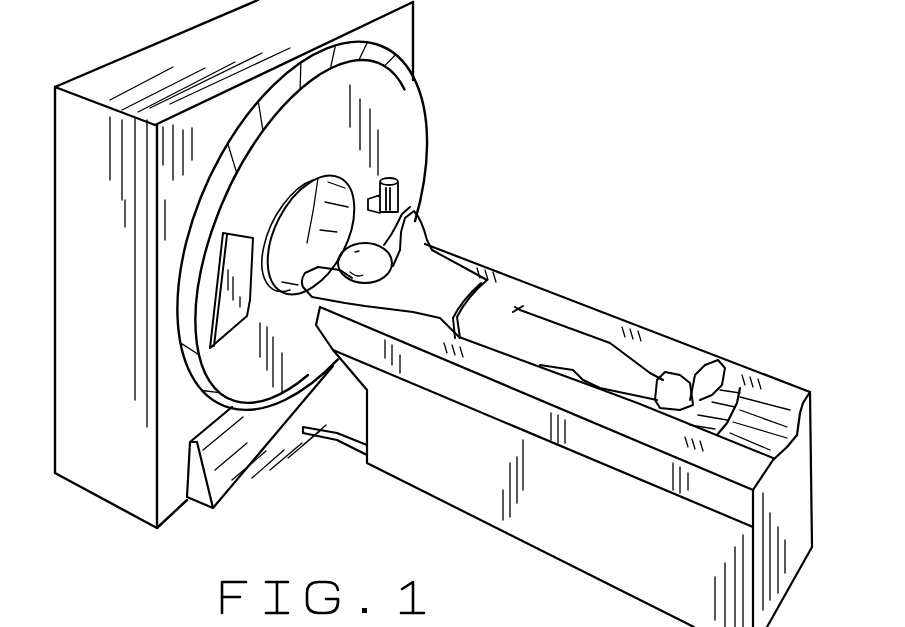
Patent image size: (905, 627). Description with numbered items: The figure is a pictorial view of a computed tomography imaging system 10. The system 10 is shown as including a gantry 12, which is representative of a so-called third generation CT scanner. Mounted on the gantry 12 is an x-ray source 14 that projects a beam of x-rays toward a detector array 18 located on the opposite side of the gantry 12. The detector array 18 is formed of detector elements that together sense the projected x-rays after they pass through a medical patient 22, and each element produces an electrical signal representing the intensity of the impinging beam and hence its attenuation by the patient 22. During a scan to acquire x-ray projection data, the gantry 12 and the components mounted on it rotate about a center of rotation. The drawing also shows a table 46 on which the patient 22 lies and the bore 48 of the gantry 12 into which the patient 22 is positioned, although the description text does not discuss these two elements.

The computed tomography (CT) imaging system 10 is at (343, 452).
The gantry 12 is at (85, 133).
The x-ray source 14 is at (398, 202).
The detector array 18 is at (230, 312).
The medical patient 22 is at (437, 277).
The patient table 46 is at (443, 467).
The bore opening 48 is at (275, 276).